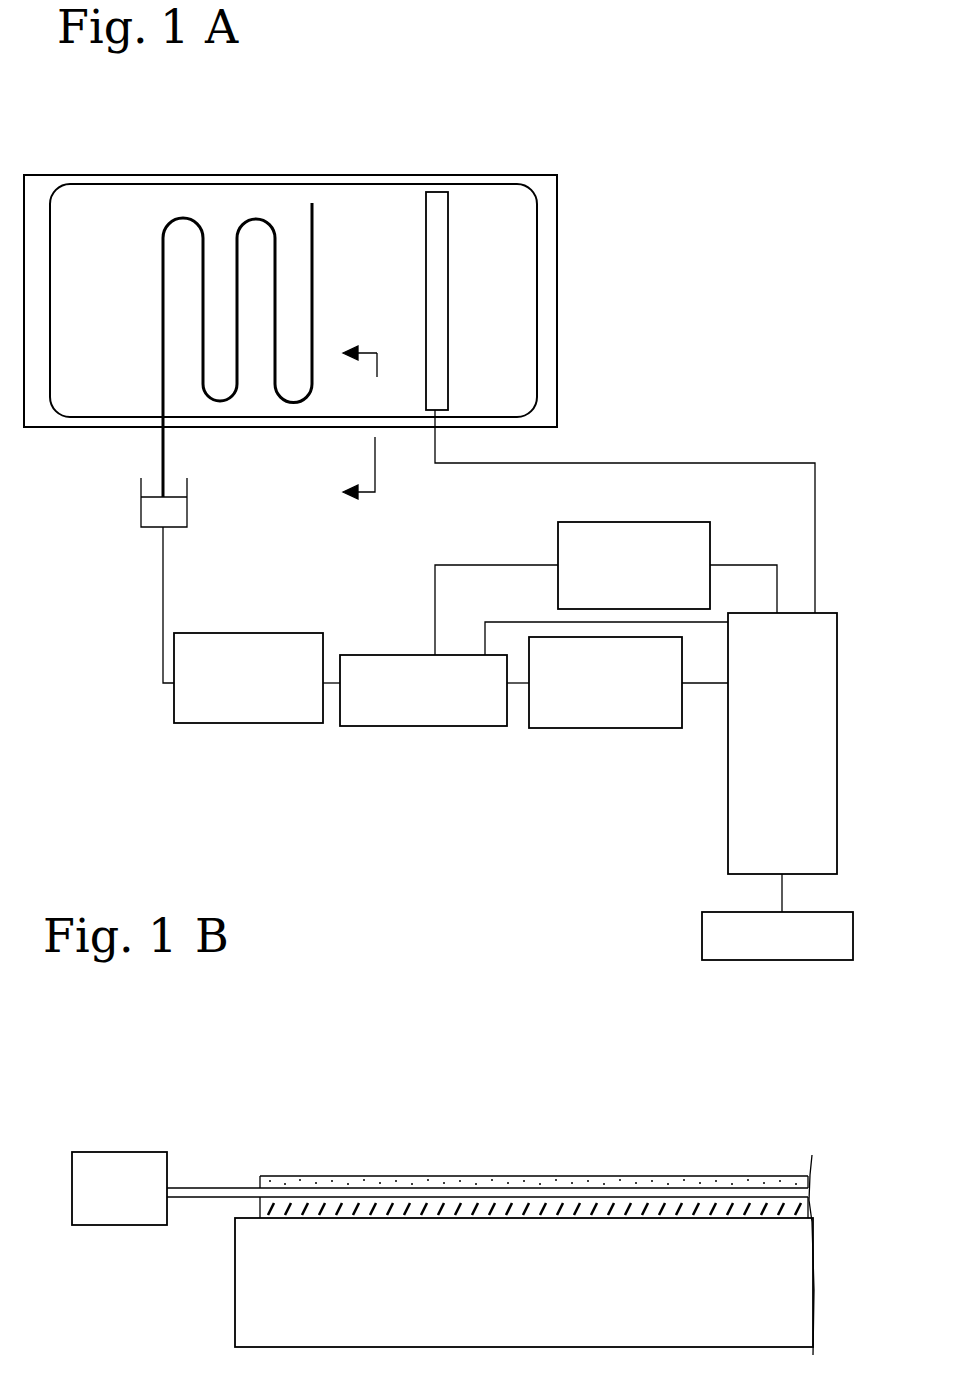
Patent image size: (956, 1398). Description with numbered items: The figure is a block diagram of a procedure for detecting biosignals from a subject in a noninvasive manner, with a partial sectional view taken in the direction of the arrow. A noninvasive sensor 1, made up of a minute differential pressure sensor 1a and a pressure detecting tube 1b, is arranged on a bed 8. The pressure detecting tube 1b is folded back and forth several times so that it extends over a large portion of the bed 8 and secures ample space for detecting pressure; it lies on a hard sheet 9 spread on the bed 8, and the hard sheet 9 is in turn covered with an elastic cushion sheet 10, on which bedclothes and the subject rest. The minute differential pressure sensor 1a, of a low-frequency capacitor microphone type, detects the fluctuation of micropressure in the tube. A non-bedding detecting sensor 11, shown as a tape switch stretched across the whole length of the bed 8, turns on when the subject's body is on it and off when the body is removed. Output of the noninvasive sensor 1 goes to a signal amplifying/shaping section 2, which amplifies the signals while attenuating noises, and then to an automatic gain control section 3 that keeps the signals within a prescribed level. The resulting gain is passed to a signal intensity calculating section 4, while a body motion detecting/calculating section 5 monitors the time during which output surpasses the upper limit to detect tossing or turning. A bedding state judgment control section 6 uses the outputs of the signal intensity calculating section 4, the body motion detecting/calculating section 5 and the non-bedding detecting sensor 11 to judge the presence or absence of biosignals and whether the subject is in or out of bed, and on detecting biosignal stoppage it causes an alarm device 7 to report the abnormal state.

In FIG. 1A, the noninvasive sensor 1 is at (226, 378).
In FIG. 1B, the noninvasive sensor 1 is at (440, 1128).
In FIG. 1A, the minute differential pressure sensor 1a is at (187, 492).
In FIG. 1B, the minute differential pressure sensor 1a is at (123, 1152).
In FIG. 1A, the pressure detecting tube 1b is at (163, 390).
In FIG. 1B, the pressure detecting tube 1b is at (487, 1138).
In FIG. 1A, the signal amplifying/shaping section 2 is at (240, 723).
In FIG. 1A, the automatic gain control section 3 is at (382, 655).
In FIG. 1A, the signal intensity calculating section 4 is at (615, 728).
In FIG. 1A, the body motion detecting/calculating section 5 is at (612, 522).
In FIG. 1A, the bedding state judgment control section 6 is at (728, 777).
In FIG. 1A, the alarm device 7 is at (702, 935).
In FIG. 1A, the bed 8 is at (557, 212).
In FIG. 1B, the bed 8 is at (235, 1290).
In FIG. 1A, the hard sheet 9 is at (537, 278).
In FIG. 1B, the hard sheet 9 is at (800, 1206).
In FIG. 1B, the elastic cushion sheet 10 is at (693, 1177).
In FIG. 1A, the non-bedding detecting sensor 11 is at (448, 322).